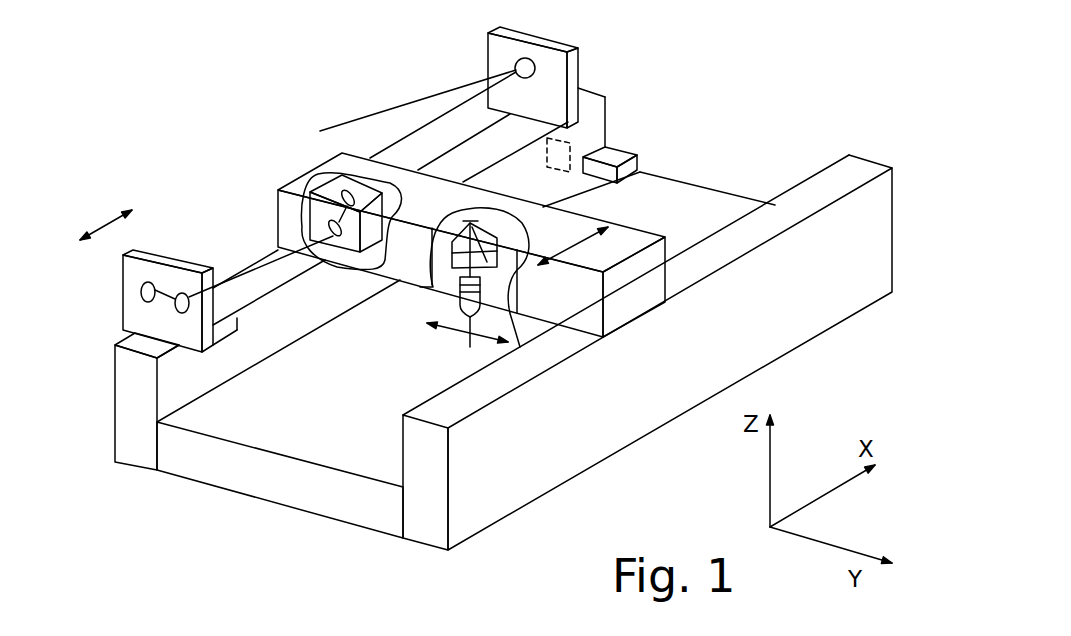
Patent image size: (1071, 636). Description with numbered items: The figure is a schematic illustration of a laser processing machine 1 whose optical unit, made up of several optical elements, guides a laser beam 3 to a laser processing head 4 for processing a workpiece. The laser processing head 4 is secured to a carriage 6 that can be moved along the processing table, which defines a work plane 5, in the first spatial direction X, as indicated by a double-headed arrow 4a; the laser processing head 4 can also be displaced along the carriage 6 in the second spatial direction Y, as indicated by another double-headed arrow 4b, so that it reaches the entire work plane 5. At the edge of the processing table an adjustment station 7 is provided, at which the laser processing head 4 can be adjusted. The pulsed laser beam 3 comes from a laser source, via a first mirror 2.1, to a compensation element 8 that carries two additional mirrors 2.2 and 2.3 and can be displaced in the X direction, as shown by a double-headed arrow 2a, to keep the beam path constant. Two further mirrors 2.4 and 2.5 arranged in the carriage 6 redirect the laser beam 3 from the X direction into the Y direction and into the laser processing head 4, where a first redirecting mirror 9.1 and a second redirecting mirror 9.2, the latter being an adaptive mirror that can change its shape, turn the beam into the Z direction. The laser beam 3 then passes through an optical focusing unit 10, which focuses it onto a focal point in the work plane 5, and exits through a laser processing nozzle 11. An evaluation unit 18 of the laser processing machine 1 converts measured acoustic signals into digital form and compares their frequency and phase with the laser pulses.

The laser processing machine 1 is at (736, 48).
The double-headed arrow 2a is at (97, 217).
The first mirror 2.1 is at (515, 65).
The mirror 2.2 is at (141, 290).
The mirror 2.3 is at (182, 293).
The mirror 2.4 is at (340, 200).
The mirror 2.5 is at (331, 229).
The laser beam 3 is at (343, 116).
The laser processing head 4 is at (625, 238).
The double-headed arrow 4a is at (587, 248).
The double-headed arrow 4b is at (445, 338).
The work plane 5 is at (273, 432).
The carriage 6 is at (715, 198).
The adjustment station 7 is at (612, 150).
The compensation element 8 is at (153, 310).
The first redirecting mirror 9.1 is at (497, 260).
The second redirecting mirror 9.2 is at (507, 240).
The optical focusing unit 10 is at (480, 293).
The laser processing nozzle 11 is at (450, 300).
The evaluation unit 18 is at (570, 145).